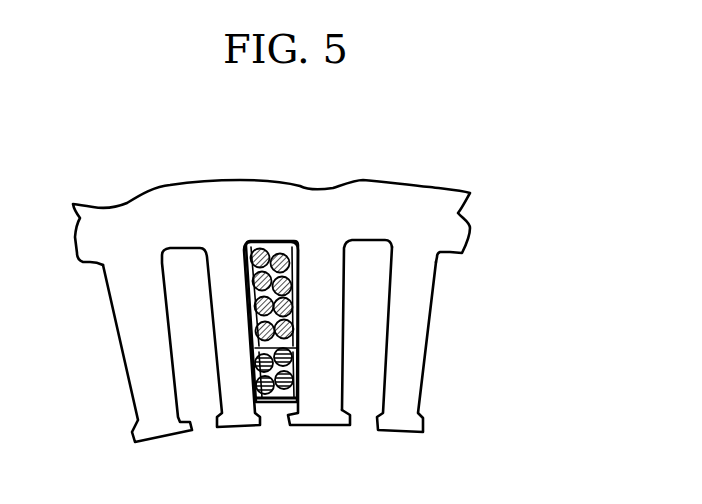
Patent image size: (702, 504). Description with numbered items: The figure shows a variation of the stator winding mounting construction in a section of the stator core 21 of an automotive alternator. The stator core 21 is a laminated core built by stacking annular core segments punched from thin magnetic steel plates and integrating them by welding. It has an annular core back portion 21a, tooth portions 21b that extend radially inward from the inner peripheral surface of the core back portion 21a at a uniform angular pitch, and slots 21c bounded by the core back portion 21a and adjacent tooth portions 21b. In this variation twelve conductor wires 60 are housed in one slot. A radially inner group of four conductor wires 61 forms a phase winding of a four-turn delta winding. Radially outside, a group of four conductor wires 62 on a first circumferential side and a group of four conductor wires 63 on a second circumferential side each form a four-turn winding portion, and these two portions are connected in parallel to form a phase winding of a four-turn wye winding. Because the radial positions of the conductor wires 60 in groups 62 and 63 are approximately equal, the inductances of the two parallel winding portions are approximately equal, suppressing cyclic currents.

The stator core 21 is at (300, 286).
The core back portion 21a is at (392, 201).
The tooth portions 21b is at (417, 292).
The slots 21c is at (372, 320).
The conductor wires 60 is at (203, 266).
The radially inner group of four conductor wires 61 is at (254, 378).
The group of four conductor wires on first circumferential side 62 is at (246, 294).
The group of four conductor wires on second circumferential side 63 is at (299, 270).